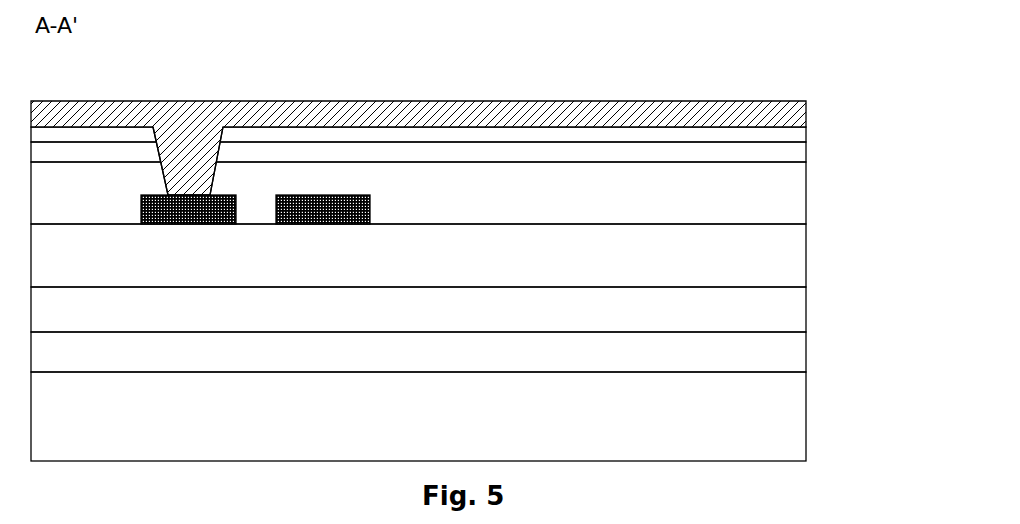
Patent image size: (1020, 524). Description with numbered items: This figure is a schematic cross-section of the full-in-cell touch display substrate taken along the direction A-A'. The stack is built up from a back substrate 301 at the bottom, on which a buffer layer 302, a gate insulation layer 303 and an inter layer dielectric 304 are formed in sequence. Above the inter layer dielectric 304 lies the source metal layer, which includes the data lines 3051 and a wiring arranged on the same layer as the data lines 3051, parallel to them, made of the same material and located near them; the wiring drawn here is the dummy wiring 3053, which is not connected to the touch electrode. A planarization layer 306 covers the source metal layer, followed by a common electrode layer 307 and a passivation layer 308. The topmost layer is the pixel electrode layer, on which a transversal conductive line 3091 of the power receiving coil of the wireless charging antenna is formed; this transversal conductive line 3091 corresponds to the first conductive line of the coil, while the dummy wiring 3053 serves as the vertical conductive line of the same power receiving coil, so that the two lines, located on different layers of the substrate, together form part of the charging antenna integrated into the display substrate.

The back substrate 301 is at (760, 432).
The buffer layer 302 is at (760, 352).
The gate insulation layer 303 is at (760, 313).
The inter layer dielectric 304 is at (770, 253).
The planarization layer 306 is at (770, 195).
The common electrode layer 307 is at (807, 147).
The passivation layer 308 is at (808, 132).
The transversal conductive line 3091 is at (772, 100).
The data lines 3051 is at (347, 196).
The dummy wiring 3053 is at (224, 195).